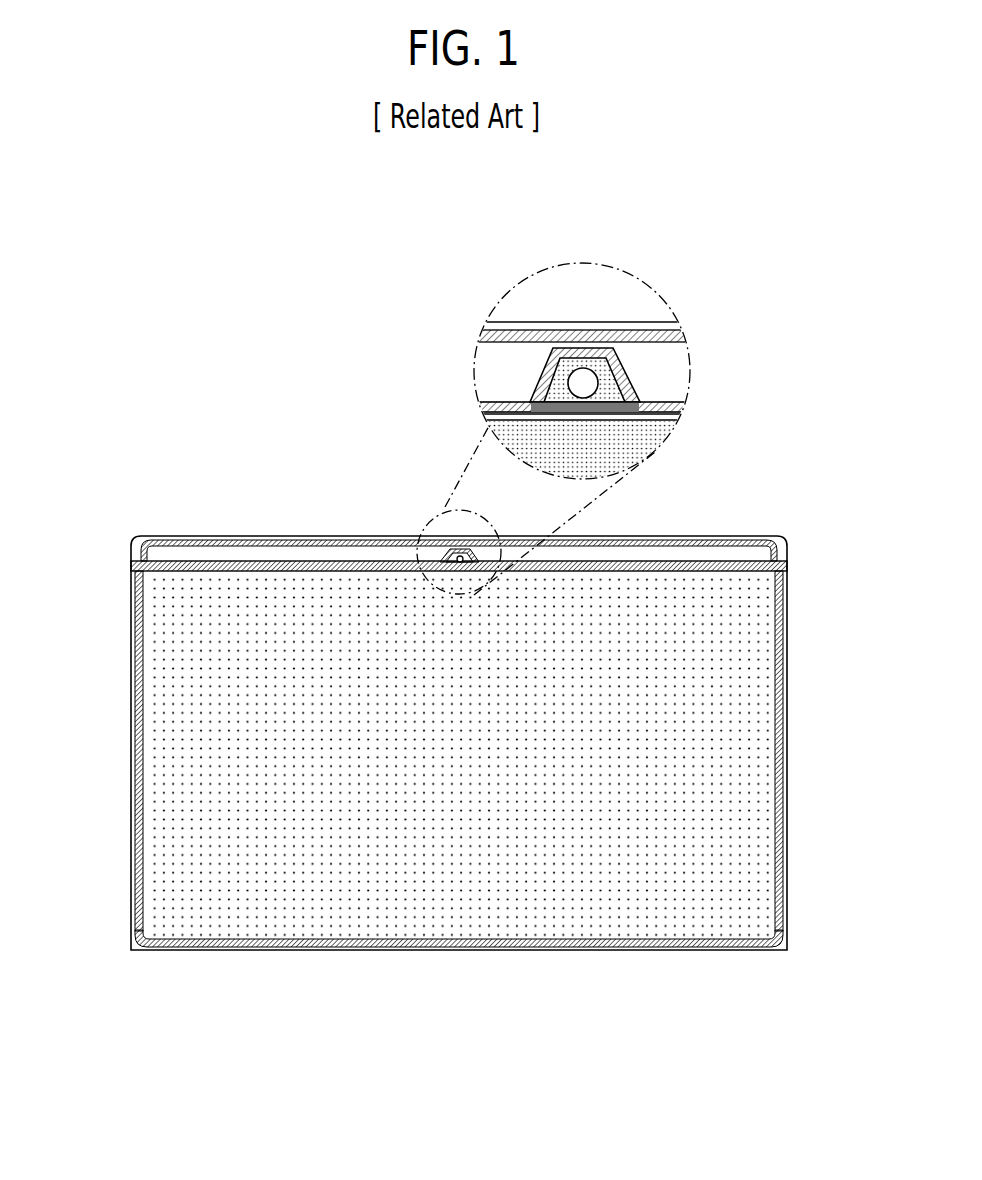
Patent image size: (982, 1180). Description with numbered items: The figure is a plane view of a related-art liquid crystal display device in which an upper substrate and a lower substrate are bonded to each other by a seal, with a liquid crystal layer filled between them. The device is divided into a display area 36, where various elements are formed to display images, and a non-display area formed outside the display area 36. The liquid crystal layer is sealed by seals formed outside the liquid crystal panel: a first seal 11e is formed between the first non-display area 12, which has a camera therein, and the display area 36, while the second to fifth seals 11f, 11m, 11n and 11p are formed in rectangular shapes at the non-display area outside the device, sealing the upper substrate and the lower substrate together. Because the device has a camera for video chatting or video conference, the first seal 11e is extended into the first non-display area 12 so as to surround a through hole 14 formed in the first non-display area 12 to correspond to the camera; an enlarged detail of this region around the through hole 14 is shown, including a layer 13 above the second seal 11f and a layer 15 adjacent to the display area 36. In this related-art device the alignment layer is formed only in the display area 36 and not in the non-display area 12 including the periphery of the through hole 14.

The first seal 11e is at (178, 562).
The second seal 11f is at (250, 543).
The third seal 11m is at (135, 702).
The fourth seal 11n is at (782, 670).
The fifth seal 11p is at (440, 945).
The first non-display area 12 is at (318, 557).
The outer plate 13 is at (378, 537).
The through hole 14 is at (441, 559).
The insulating layer 15 is at (507, 417).
The display area 36 is at (730, 845).